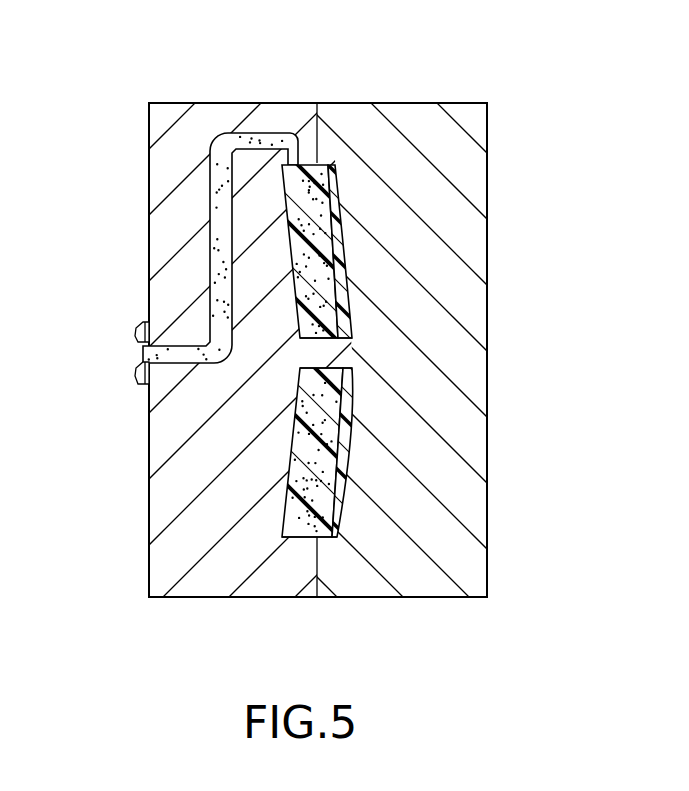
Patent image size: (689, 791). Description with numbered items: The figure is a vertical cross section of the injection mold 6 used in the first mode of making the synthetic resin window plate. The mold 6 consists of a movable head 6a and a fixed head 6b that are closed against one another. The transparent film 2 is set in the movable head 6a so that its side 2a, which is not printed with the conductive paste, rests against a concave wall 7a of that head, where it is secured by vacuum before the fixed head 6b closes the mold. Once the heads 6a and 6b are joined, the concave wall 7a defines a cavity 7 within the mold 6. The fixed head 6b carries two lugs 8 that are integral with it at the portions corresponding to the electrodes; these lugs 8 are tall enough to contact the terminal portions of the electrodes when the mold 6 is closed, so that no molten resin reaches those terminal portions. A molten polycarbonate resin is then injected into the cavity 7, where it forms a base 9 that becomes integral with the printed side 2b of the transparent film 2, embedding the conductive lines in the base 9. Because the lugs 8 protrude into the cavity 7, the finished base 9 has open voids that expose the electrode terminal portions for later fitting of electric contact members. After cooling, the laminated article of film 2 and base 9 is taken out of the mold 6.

The injection mold 6 is at (430, 98).
The movable head 6a is at (479, 243).
The fixed head 6b is at (154, 130).
The transparent film 2 is at (347, 458).
The film side not printed with the paste 2a is at (353, 403).
The printed side of the transparent film 2b is at (340, 536).
The cavity 7 is at (300, 538).
The concave wall 7a is at (340, 516).
The lug 8 is at (350, 348).
The base 9 is at (283, 535).